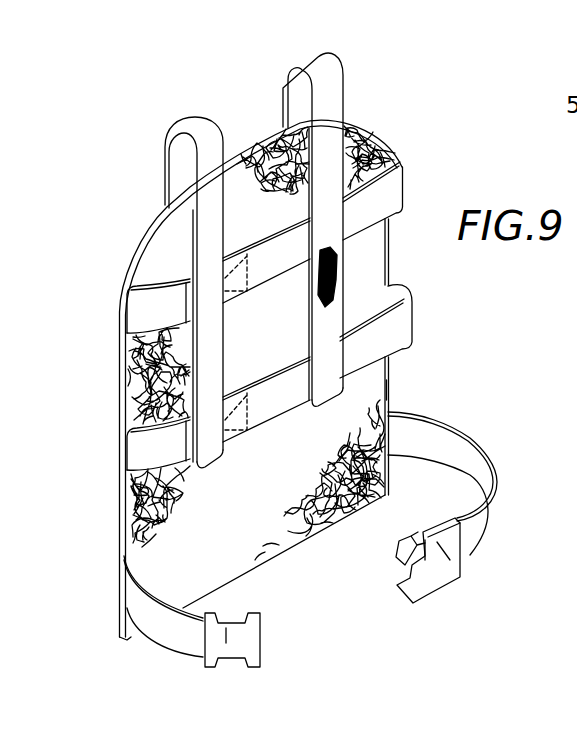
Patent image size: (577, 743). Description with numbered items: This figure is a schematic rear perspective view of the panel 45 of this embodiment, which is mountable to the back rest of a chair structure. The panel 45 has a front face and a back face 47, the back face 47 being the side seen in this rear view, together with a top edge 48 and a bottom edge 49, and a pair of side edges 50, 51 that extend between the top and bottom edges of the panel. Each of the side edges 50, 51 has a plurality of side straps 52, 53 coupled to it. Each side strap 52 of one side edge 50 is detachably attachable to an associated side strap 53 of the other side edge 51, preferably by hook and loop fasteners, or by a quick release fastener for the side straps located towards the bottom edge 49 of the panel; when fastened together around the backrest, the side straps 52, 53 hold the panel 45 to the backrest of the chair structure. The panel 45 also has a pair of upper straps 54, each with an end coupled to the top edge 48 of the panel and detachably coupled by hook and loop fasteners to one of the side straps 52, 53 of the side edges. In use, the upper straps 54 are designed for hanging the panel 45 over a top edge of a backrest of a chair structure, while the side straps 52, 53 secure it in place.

The panel 45 is at (356, 117).
The back face 47 is at (388, 413).
The top edge 48 is at (247, 157).
The bottom edge 49 is at (280, 556).
The side edge 50 is at (122, 510).
The side edge 51 is at (389, 387).
The side strap 52 is at (143, 319).
The side strap 53 is at (390, 194).
The upper strap 54 is at (208, 137).